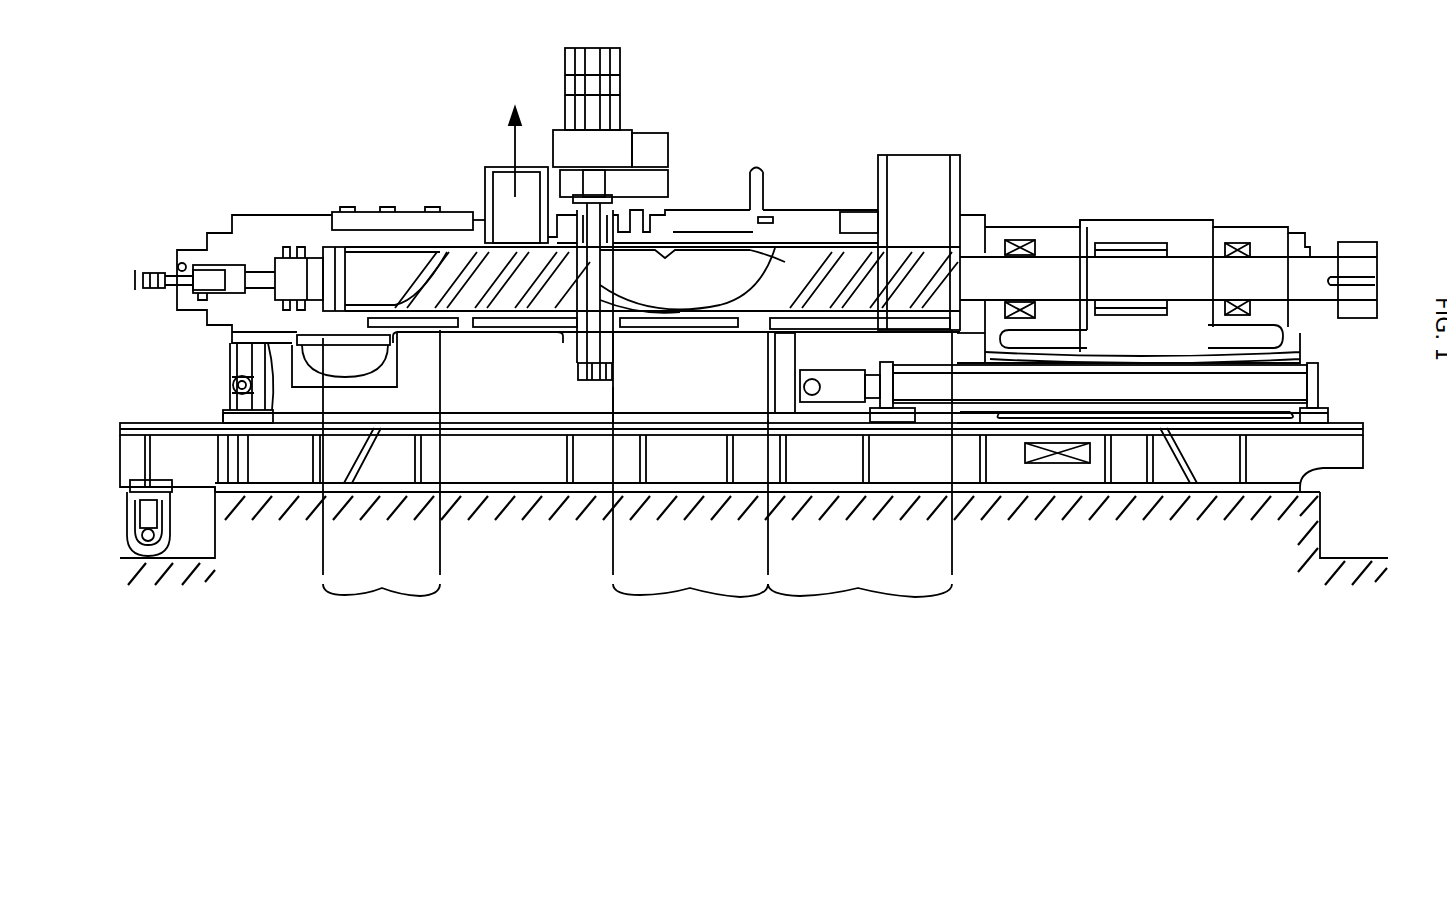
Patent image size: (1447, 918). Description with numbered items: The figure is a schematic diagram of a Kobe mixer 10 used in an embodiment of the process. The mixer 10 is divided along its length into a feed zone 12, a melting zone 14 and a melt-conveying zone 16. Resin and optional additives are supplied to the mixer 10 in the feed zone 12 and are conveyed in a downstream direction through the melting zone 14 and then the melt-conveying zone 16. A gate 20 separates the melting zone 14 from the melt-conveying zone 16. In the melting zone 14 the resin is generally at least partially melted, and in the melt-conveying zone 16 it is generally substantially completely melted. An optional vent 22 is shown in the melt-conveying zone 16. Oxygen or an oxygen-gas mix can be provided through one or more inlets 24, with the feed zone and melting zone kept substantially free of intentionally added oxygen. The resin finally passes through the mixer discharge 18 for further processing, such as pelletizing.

The Kobe mixer 10 is at (1082, 135).
The feed zone 12 is at (858, 589).
The melting zone 14 is at (690, 589).
The melt-conveying zone 16 is at (382, 590).
The mixer discharge 18 is at (338, 378).
The gate 20 is at (592, 382).
The vent 22 is at (505, 163).
The inlets 24 is at (432, 207).